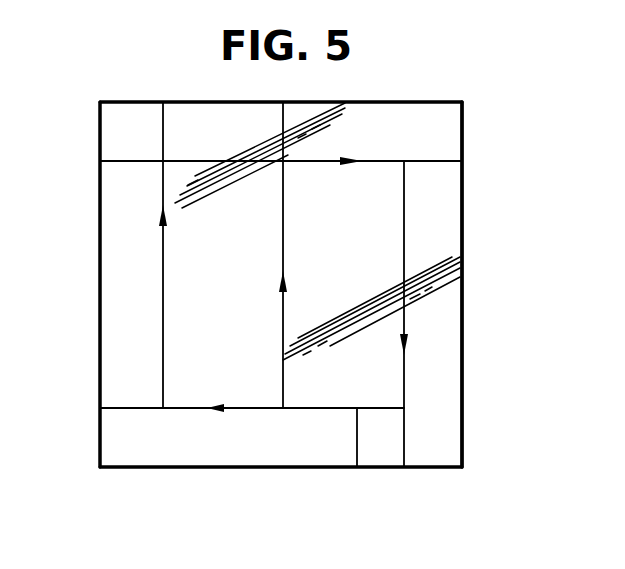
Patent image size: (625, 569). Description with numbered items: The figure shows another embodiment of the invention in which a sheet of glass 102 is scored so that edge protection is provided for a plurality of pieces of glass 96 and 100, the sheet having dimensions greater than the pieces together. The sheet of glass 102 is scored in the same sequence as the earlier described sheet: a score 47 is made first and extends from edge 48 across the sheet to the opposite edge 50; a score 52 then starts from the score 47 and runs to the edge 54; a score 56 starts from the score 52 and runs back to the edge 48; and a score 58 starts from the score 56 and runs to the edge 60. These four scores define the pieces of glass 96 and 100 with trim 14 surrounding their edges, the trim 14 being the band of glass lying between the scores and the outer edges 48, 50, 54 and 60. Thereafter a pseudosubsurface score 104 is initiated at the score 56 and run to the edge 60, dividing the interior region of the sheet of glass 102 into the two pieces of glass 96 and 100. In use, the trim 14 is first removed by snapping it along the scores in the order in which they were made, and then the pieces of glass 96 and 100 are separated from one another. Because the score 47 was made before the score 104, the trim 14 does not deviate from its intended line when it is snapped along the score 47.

The trim 14 is at (430, 117).
The score 47 is at (442, 161).
The edge 48 is at (99, 228).
The edge 50 is at (462, 293).
The score 52 is at (402, 382).
The edge 54 is at (437, 469).
The score 56 is at (357, 467).
The score 58 is at (160, 336).
The edge 60 is at (196, 102).
The piece of glass 96 is at (305, 392).
The piece of glass 100 is at (203, 377).
The sheet of glass 102 is at (403, 82).
The pseudosubsurface score 104 is at (283, 251).